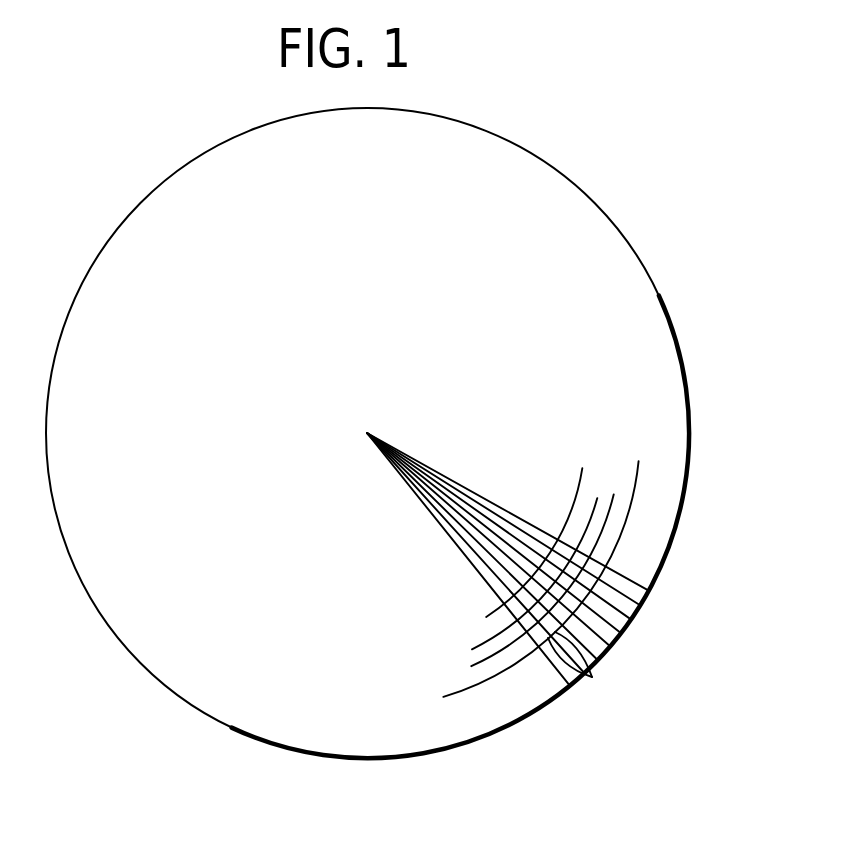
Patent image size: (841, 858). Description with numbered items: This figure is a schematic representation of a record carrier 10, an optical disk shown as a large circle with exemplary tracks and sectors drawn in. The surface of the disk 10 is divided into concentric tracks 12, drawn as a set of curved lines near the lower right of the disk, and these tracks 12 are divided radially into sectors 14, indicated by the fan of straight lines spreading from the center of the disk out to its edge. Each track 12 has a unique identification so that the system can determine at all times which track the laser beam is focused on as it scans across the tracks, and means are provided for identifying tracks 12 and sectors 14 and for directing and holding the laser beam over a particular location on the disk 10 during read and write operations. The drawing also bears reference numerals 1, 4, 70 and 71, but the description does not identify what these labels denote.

The circular member 1 is at (632, 251).
The record carrier 10 is at (410, 433).
The concentric tracks 12 is at (637, 488).
The arc lines 4 is at (630, 518).
The sectors 14 is at (637, 592).
The scan line end 70 is at (613, 633).
The detail region 71 is at (592, 677).